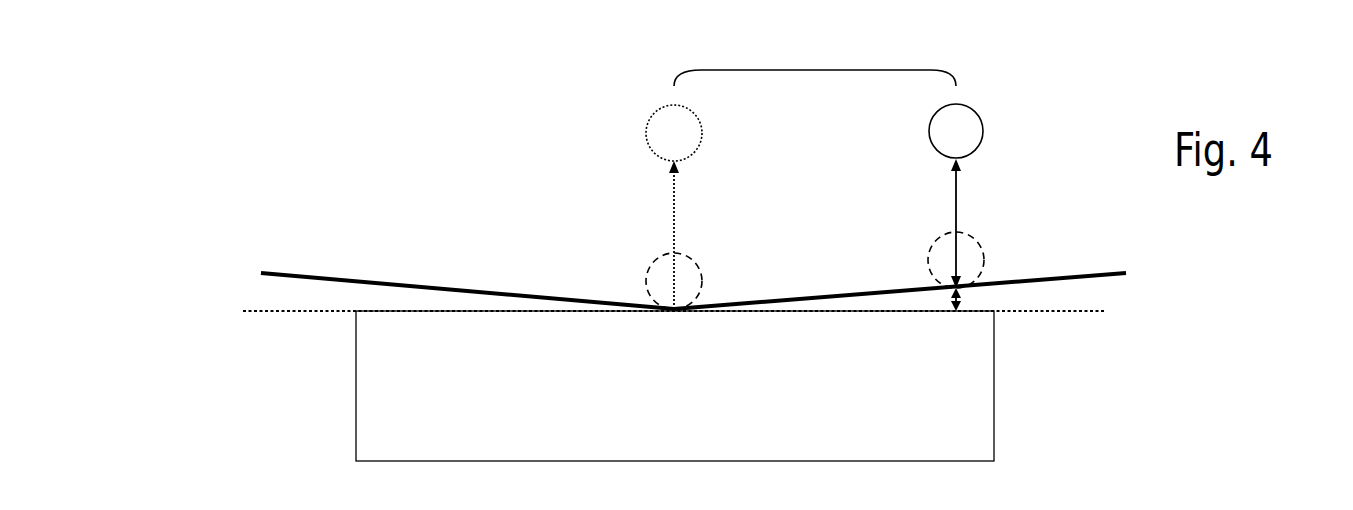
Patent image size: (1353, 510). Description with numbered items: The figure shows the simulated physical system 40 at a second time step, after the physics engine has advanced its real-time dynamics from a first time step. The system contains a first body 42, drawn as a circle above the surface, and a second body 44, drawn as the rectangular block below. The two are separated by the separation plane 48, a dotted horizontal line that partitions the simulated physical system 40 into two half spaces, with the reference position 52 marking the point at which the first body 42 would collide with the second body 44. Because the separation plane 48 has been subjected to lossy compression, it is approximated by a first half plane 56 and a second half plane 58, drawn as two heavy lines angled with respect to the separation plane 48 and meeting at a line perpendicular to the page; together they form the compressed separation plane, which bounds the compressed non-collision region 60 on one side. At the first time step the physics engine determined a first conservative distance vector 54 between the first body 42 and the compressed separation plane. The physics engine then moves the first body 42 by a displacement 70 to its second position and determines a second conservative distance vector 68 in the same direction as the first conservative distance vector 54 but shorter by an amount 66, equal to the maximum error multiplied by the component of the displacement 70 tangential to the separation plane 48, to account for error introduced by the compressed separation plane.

The simulated physical system 40 is at (180, 136).
The first body 42 is at (982, 130).
The second body 44 is at (355, 385).
The separation plane 48 is at (312, 310).
The reference position 52 is at (927, 257).
The first conservative distance vector 54 is at (672, 225).
The first half plane 56 is at (482, 288).
The second half plane 58 is at (1088, 277).
The compressed non-collision region 60 is at (262, 229).
The amount 66 is at (957, 297).
The second conservative distance vector 68 is at (955, 210).
The displacement 70 is at (813, 67).